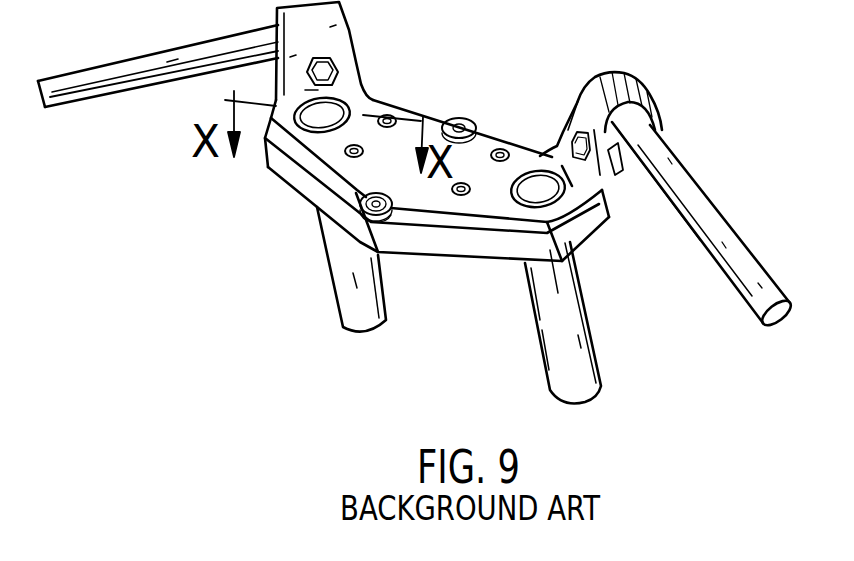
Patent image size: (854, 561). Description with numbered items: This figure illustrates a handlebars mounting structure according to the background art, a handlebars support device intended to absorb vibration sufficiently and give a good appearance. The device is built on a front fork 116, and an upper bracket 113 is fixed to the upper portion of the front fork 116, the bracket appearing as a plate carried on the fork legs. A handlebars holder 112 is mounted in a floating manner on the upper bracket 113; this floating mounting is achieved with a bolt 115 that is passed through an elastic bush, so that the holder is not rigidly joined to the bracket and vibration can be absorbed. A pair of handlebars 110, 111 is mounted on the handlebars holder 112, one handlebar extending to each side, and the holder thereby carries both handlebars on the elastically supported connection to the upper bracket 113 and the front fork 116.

The handlebar 110 is at (134, 85).
The handlebar 111 is at (701, 225).
The handlebars holder 112 is at (429, 212).
The upper bracket 113 is at (505, 252).
The bolt 115 is at (390, 118).
The front fork 116 is at (342, 290).